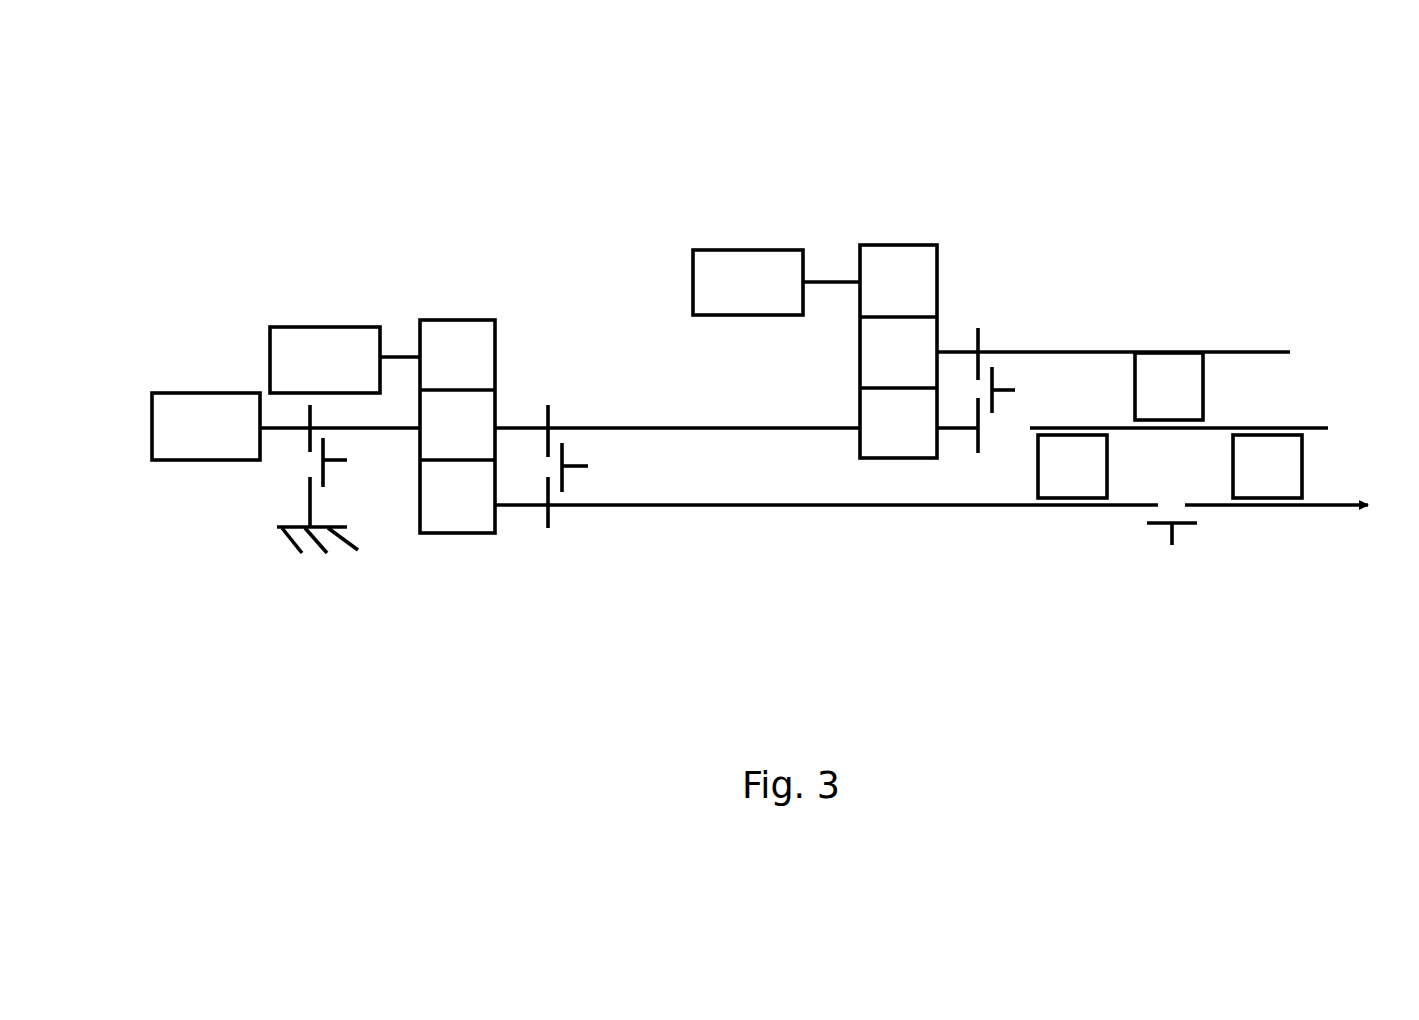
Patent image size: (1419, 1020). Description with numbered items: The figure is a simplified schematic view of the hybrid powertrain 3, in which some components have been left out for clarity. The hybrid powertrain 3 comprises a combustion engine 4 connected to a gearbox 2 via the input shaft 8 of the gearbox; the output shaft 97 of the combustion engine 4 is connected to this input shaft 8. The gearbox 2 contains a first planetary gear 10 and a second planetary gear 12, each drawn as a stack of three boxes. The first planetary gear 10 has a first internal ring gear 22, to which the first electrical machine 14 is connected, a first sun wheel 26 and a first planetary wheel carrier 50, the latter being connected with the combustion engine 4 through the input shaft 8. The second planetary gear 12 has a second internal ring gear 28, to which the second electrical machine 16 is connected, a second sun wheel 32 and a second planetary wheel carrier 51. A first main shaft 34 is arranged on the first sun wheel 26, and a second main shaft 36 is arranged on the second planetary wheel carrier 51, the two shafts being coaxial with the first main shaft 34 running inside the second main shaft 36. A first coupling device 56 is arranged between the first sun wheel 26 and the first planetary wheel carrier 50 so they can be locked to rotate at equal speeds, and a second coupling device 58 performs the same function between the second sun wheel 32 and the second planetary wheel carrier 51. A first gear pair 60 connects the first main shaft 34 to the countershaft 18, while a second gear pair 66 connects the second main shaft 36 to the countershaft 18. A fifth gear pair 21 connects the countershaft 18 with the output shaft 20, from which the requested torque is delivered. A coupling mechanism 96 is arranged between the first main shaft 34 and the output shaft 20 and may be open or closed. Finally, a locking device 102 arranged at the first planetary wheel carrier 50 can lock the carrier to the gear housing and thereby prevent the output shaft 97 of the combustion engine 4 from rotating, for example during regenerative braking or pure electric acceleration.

The gearbox 2 is at (1061, 196).
The hybrid powertrain 3 is at (825, 135).
The combustion engine 4 is at (182, 410).
The input shaft 8 is at (375, 425).
The first planetary gear 10 is at (500, 250).
The second planetary gear 12 is at (926, 178).
The first electrical machine 14 is at (325, 340).
The second electrical machine 16 is at (740, 265).
The countershaft 18 is at (1310, 425).
The output shaft 20 is at (1333, 497).
The fifth gear pair 21 is at (1282, 483).
The first internal ring gear 22 is at (478, 355).
The first sun wheel 26 is at (458, 515).
The second internal ring gear 28 is at (925, 283).
The second sun wheel 32 is at (907, 443).
The first main shaft 34 is at (713, 508).
The second main shaft 36 is at (1065, 350).
The first planetary wheel carrier 50 is at (482, 420).
The second planetary wheel carrier 51 is at (868, 360).
The first coupling device 56 is at (572, 470).
The second coupling device 58 is at (1013, 387).
The first gear pair 60 is at (1073, 483).
The second gear pair 66 is at (1170, 365).
The coupling mechanism 96 is at (1180, 545).
The output shaft of the combustion engine 97 is at (285, 432).
The locking device 102 is at (335, 455).